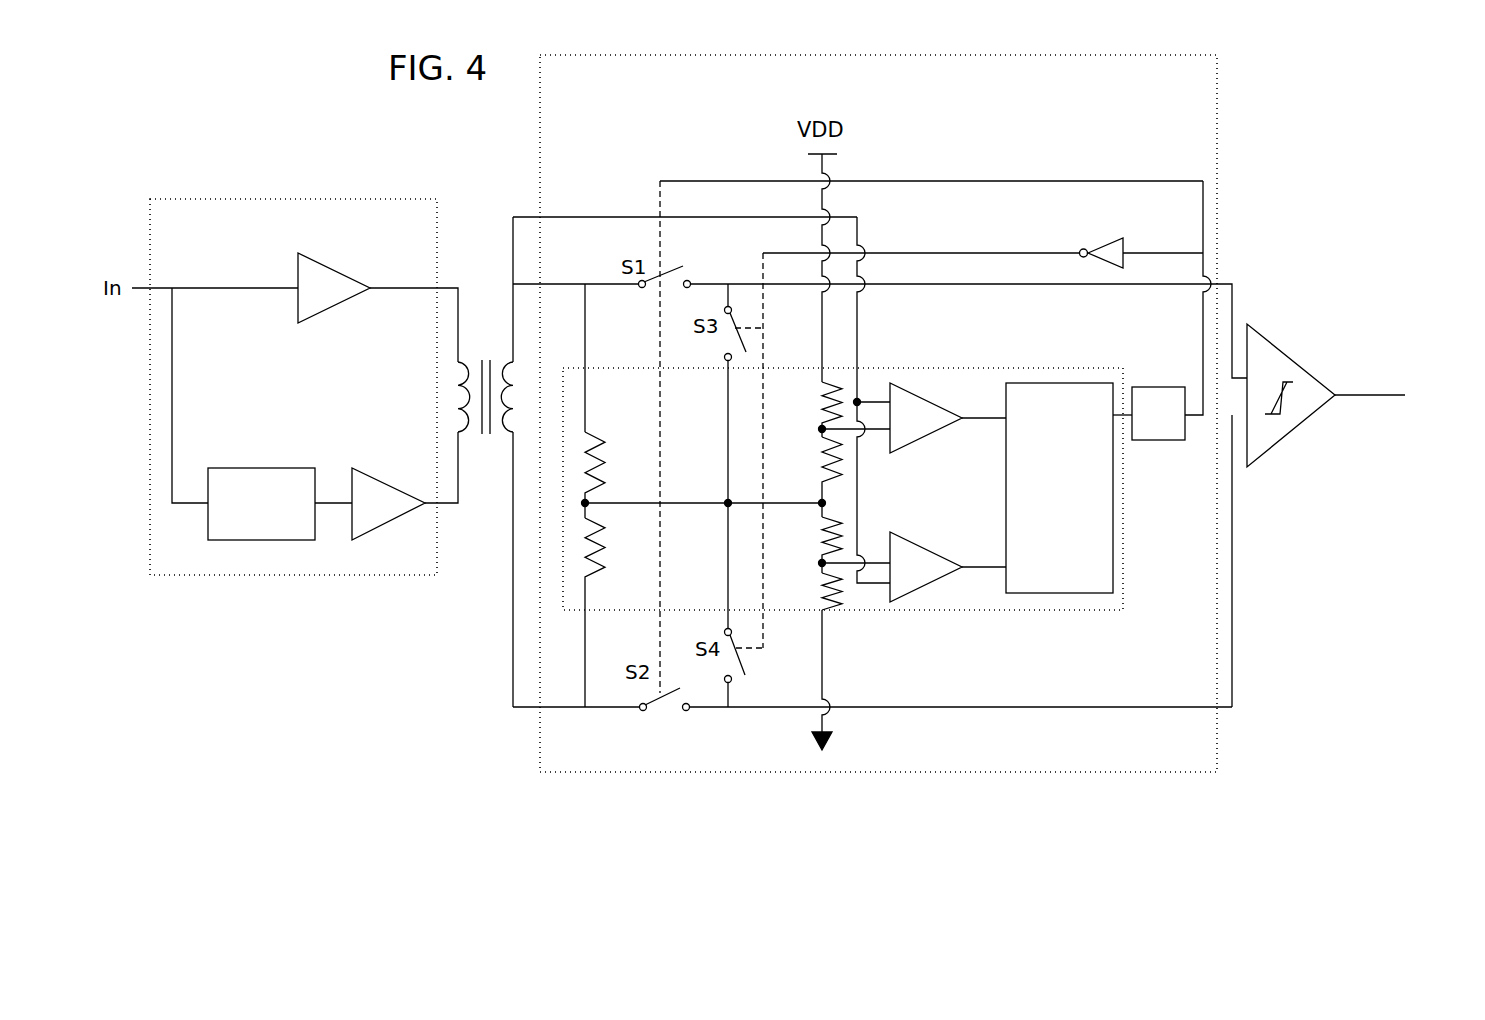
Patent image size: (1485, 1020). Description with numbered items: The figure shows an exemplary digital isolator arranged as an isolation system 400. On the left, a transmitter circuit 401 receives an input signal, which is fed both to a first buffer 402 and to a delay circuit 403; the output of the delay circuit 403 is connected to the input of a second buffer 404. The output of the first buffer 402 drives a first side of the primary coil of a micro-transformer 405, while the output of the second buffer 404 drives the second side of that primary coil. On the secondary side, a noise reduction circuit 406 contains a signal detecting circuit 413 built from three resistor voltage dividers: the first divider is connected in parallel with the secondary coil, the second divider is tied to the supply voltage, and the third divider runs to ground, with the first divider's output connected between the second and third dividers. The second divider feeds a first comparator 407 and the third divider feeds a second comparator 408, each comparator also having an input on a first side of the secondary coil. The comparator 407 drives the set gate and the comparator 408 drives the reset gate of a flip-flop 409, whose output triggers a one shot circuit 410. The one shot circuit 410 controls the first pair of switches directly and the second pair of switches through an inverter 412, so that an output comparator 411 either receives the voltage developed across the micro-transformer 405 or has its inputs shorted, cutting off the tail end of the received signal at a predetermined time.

The isolation system 400 is at (227, 166).
The transmitter circuit 401 is at (207, 267).
The first buffer 402 is at (322, 263).
The delay circuit 403 is at (238, 468).
The second buffer 404 is at (373, 476).
The micro-transformer 405 is at (485, 437).
The noise reduction circuit 406 is at (592, 126).
The comparator 407 is at (926, 399).
The comparator 408 is at (926, 548).
The flip-flop 409 is at (1048, 593).
The one shot circuit 410 is at (1145, 440).
The comparator 411 is at (1273, 345).
The inverter 412 is at (1106, 240).
The signal detecting circuit 413 is at (639, 407).